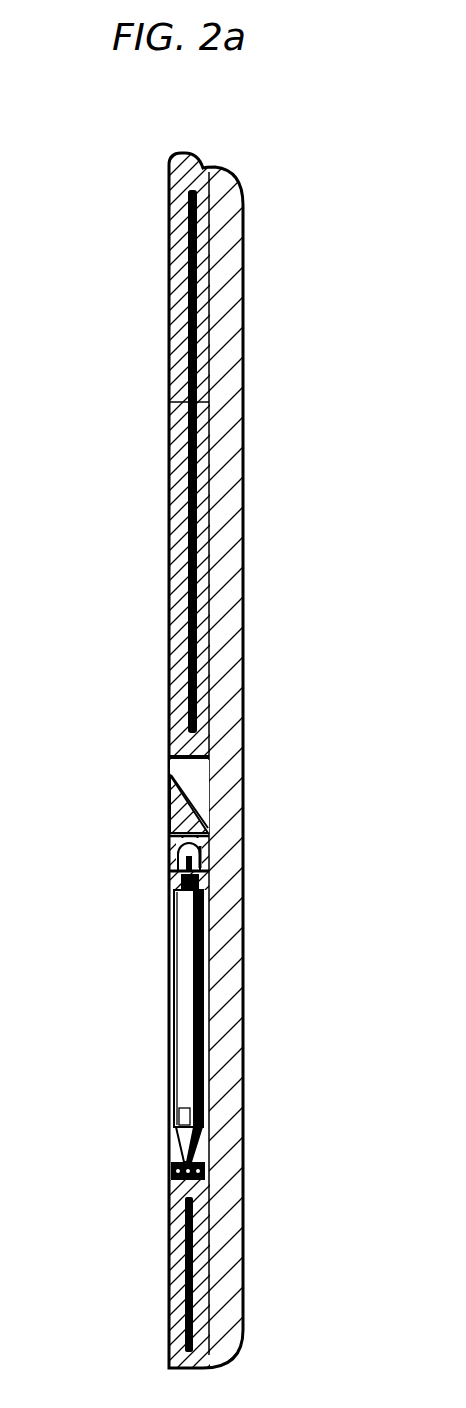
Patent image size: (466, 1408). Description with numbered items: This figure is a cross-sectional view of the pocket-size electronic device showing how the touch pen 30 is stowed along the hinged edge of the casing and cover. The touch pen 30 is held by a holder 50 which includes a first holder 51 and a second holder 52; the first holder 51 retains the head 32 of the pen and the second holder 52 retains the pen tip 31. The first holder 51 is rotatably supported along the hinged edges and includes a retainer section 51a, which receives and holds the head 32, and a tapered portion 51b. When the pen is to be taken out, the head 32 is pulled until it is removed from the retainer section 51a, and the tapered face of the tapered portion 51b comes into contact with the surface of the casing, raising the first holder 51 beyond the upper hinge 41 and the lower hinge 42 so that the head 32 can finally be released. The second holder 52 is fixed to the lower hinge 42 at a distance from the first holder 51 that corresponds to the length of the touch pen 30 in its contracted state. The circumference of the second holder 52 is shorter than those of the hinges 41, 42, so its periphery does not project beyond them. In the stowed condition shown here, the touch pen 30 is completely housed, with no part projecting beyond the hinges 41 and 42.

The upper hinge 41 is at (128, 579).
The lower hinge 42 is at (154, 1262).
The holder 50 is at (152, 760).
The first holder 51 is at (138, 832).
The retainer section 51a is at (205, 840).
The tapered portion 51b is at (167, 815).
The head 32 is at (205, 887).
The touch pen 30 is at (172, 1022).
The pen tip 31 is at (193, 1180).
The second holder 52 is at (172, 1165).